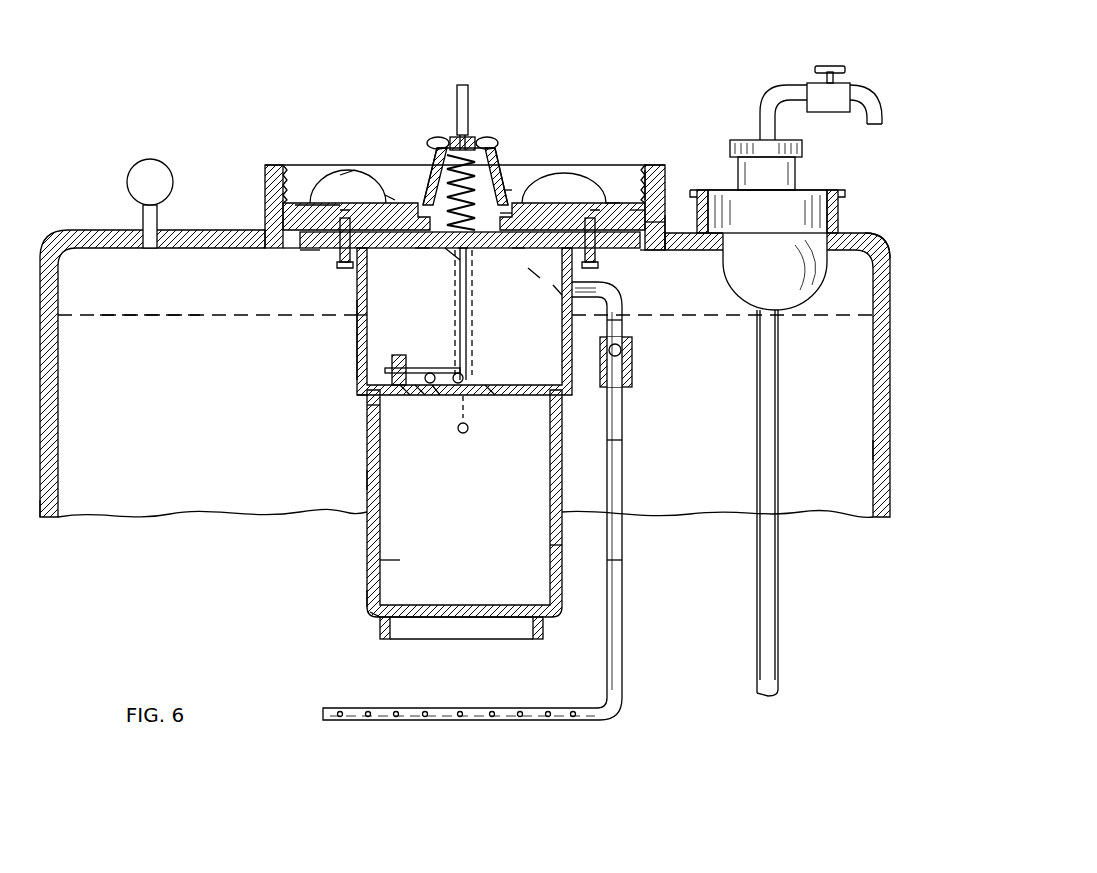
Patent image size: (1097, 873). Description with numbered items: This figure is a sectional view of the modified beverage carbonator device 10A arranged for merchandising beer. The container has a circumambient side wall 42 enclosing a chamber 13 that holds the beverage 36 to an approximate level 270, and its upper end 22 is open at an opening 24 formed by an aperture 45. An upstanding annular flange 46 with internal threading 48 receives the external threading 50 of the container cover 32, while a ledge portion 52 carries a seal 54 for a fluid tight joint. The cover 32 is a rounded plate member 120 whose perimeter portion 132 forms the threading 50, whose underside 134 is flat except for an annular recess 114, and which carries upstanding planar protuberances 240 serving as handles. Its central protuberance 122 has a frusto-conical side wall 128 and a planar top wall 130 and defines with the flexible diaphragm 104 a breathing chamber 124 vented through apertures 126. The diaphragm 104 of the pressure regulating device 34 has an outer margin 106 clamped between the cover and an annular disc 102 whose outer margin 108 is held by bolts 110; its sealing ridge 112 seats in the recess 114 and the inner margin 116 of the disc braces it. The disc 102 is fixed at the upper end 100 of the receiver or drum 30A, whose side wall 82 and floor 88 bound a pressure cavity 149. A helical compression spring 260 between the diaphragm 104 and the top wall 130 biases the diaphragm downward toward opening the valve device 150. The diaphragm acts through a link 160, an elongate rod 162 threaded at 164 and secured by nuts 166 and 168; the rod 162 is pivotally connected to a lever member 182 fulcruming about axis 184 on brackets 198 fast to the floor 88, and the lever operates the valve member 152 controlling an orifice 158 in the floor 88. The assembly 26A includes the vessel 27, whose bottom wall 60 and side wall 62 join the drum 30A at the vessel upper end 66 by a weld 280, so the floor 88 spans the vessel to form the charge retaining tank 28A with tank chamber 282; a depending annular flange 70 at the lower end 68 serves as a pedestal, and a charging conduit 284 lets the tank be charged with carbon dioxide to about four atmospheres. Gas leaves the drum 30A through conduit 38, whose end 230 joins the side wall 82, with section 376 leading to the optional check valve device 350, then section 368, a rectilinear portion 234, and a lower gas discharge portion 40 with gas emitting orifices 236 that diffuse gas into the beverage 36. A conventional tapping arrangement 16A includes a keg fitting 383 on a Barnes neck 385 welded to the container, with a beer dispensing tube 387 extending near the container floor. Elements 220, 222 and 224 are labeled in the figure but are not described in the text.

The beverage carbonator device 10A is at (92, 222).
The chamber 13 is at (865, 284).
The beverage 36 is at (862, 453).
The upper end 22 is at (878, 243).
The circumambient side wall 42 is at (40, 495).
The beverage level 270 is at (152, 314).
The container cover 32 is at (625, 228).
The external threading 50 is at (266, 210).
The upstanding annular flange 46 is at (661, 222).
The internal threading 48 is at (648, 192).
The seal 54 is at (668, 236).
The circumambient ledge portion 52 is at (650, 253).
The apertures 126 is at (412, 200).
The upper end of receiver 100 is at (356, 262).
The opening 24 is at (305, 258).
The aperture 45 is at (300, 253).
The underside of cover member 134 is at (336, 255).
The outer margin of disc 108 is at (594, 257).
The securing bolts or screws 110 is at (320, 200).
The upstanding planar protuberances 240 is at (338, 200).
The rounded plate member 120 is at (350, 170).
The nut 168 is at (392, 196).
The annular recess 114 is at (612, 205).
The outer margin of diaphragm 106 is at (640, 210).
The perimeter portion 132 is at (655, 222).
The pressure regulating device 34 is at (526, 198).
The breathing chamber 124 is at (535, 213).
The spring 220 is at (520, 170).
The helical compression spring 260 is at (515, 185).
The charging conduit 284 is at (458, 120).
The stem 224 is at (467, 148).
The wing nut 222 is at (450, 148).
The planar top wall 130 is at (495, 130).
The upstanding protuberance 122 is at (505, 155).
The upstanding side wall 128 is at (437, 172).
The receiver side wall 82 is at (358, 386).
The carbonating gas receiver or drum 30A is at (352, 350).
The pressure cavity 149 is at (358, 318).
The link 160 is at (452, 299).
The elongate rod 162 is at (473, 314).
The threading 164 is at (470, 252).
The nut 166 is at (452, 250).
The inner margin of disc 116 is at (423, 249).
The flexible elastomeric diaphragm 104 is at (521, 251).
The annular disc 102 is at (534, 276).
The annular sealing ridge 112 is at (556, 292).
The valve member 152 is at (400, 358).
The bracket 198 is at (431, 368).
The carbonating gas passing orifice 158 is at (409, 397).
The lever member 182 is at (421, 397).
The fulcrum axis 184 is at (435, 397).
The receiver floor 88 is at (508, 396).
The valve device 150 is at (490, 396).
The weld 280 is at (362, 400).
The vessel upper end 66 is at (367, 420).
The receptacle or vessel 27 is at (367, 536).
The carbonating gas charge receiving and pressure regulating assembly 26A is at (352, 480).
The tank chamber 282 is at (396, 566).
The charge retaining tank 28A is at (362, 600).
The lower end of tank 68 is at (378, 619).
The vessel side wall 62 is at (563, 553).
The depending annular flange 70 is at (383, 633).
The bottom wall 60 is at (523, 616).
The check valve device 350 is at (640, 367).
The conduit section 368 is at (624, 345).
The conduit 38 is at (626, 294).
The conduit end 230 is at (605, 340).
The conduit section 376 is at (625, 446).
The rectilinear portion 234 is at (623, 560).
The gas discharge portion 40 is at (482, 721).
The gas emitting orifices 236 is at (422, 712).
The Barnes neck 385 is at (840, 216).
The keg fitting 383 is at (776, 212).
The beer dispensing tube 387 is at (778, 392).
The tapping arrangement 16A is at (862, 76).